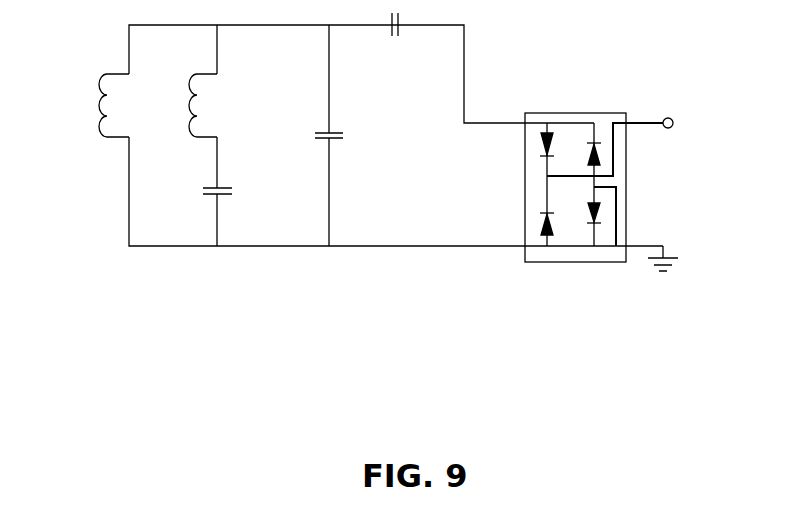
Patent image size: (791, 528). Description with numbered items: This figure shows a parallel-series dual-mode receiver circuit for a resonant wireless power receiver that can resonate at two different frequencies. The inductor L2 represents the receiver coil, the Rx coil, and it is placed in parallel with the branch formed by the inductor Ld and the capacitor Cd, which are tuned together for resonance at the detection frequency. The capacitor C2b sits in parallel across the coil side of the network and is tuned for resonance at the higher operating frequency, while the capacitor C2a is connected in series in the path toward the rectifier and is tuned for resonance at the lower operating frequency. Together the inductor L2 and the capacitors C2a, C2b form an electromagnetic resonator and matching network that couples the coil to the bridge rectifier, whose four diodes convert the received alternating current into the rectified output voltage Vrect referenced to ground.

The inductor L2 is at (77, 105).
The inductor Ld is at (207, 105).
The capacitor Cd is at (201, 190).
The capacitor C2b is at (310, 140).
The capacitor C2a is at (390, 35).
The rectified voltage output Vrect is at (692, 124).